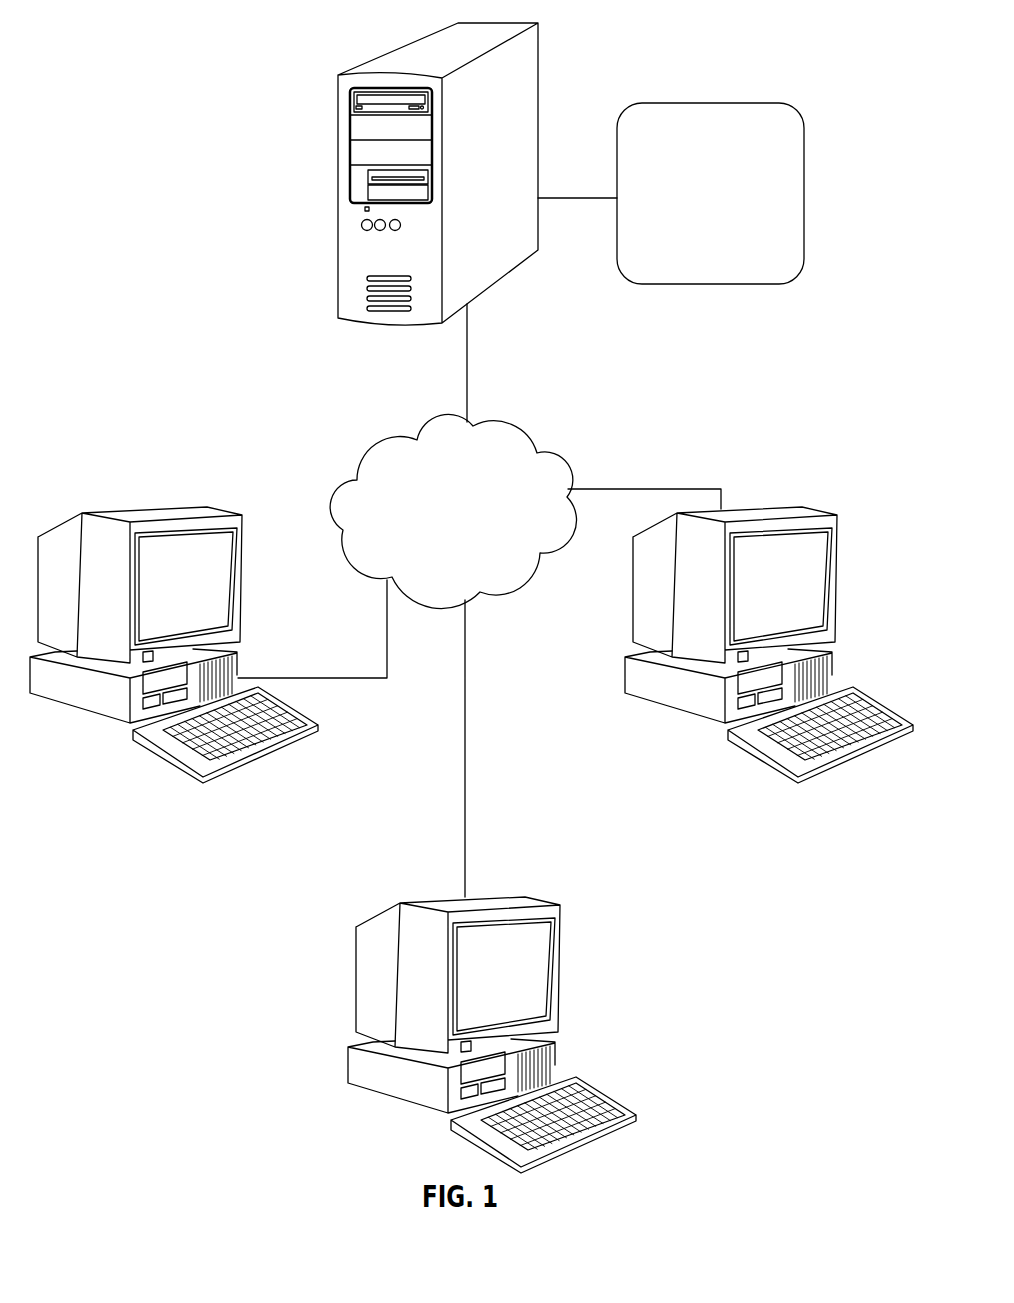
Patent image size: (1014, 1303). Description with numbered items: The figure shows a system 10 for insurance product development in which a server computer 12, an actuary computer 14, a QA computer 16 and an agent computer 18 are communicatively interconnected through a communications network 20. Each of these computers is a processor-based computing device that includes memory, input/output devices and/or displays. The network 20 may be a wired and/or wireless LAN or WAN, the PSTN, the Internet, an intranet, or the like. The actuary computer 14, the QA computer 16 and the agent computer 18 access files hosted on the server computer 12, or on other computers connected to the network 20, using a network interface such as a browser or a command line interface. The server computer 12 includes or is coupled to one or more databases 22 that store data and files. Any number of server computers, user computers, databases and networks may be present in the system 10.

The system 10 is at (175, 65).
The server computer 12 is at (300, 247).
The actuary computer 14 is at (193, 486).
The QA computer 16 is at (320, 1001).
The agent computer 18 is at (636, 768).
The communications network 20 is at (443, 539).
The database 22 is at (697, 220).